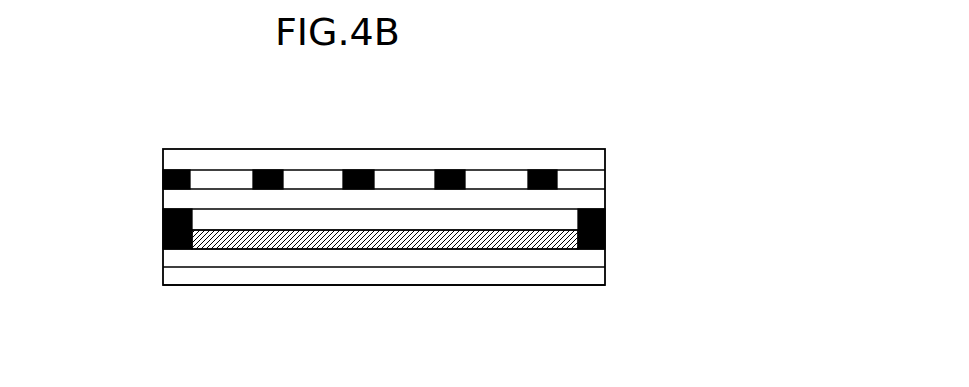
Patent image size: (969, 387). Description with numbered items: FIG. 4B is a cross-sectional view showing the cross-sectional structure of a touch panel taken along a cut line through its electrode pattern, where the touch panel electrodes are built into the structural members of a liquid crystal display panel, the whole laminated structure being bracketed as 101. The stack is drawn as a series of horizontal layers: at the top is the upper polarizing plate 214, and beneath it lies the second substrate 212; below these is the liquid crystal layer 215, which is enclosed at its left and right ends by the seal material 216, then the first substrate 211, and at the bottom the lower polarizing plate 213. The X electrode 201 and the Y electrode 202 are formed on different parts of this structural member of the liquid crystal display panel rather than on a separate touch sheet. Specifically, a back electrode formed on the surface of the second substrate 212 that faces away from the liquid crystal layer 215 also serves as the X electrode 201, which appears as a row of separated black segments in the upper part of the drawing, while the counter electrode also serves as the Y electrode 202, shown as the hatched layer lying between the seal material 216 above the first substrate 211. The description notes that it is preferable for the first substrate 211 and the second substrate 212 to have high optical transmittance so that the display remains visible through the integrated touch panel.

The display module / laminated structure 101 is at (610, 148).
The X electrode 201 is at (163, 171).
The Y electrode 202 is at (490, 243).
The first substrate 211 is at (412, 262).
The second substrate 212 is at (293, 197).
The lower polarizing plate 213 is at (302, 277).
The upper polarizing plate 214 is at (542, 156).
The liquid crystal layer 215 is at (243, 222).
The seal material 216 is at (163, 246).